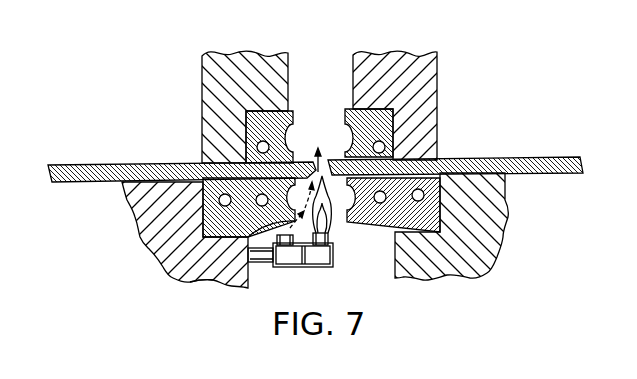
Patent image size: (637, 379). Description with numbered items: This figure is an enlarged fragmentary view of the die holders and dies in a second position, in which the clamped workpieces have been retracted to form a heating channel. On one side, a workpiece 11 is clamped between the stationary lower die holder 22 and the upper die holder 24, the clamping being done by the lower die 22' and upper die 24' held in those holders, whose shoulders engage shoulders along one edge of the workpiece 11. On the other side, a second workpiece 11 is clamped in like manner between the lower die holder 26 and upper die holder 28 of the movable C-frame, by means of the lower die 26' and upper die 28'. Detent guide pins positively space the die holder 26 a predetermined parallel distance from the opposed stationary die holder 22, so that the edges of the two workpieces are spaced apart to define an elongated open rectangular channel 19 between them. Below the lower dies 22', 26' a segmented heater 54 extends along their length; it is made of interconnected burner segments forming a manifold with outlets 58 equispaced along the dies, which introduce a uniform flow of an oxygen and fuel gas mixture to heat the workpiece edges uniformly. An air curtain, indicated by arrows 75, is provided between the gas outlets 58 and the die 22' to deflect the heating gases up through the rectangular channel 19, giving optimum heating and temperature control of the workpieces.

The workpiece 11 is at (95, 165).
The open rectangular channel 19 is at (324, 156).
The stationary lower die holder 22 is at (170, 235).
The lower die 22' is at (184, 207).
The upper die holder 24 is at (219, 107).
The upper die 24' is at (218, 137).
The lower die holder 26 is at (472, 226).
The lower die 26' is at (454, 205).
The upper die holder 28 is at (424, 105).
The upper die 28' is at (420, 133).
The segmented heater 54 is at (300, 267).
The outlets 58 is at (330, 233).
The air curtain 75 is at (207, 282).